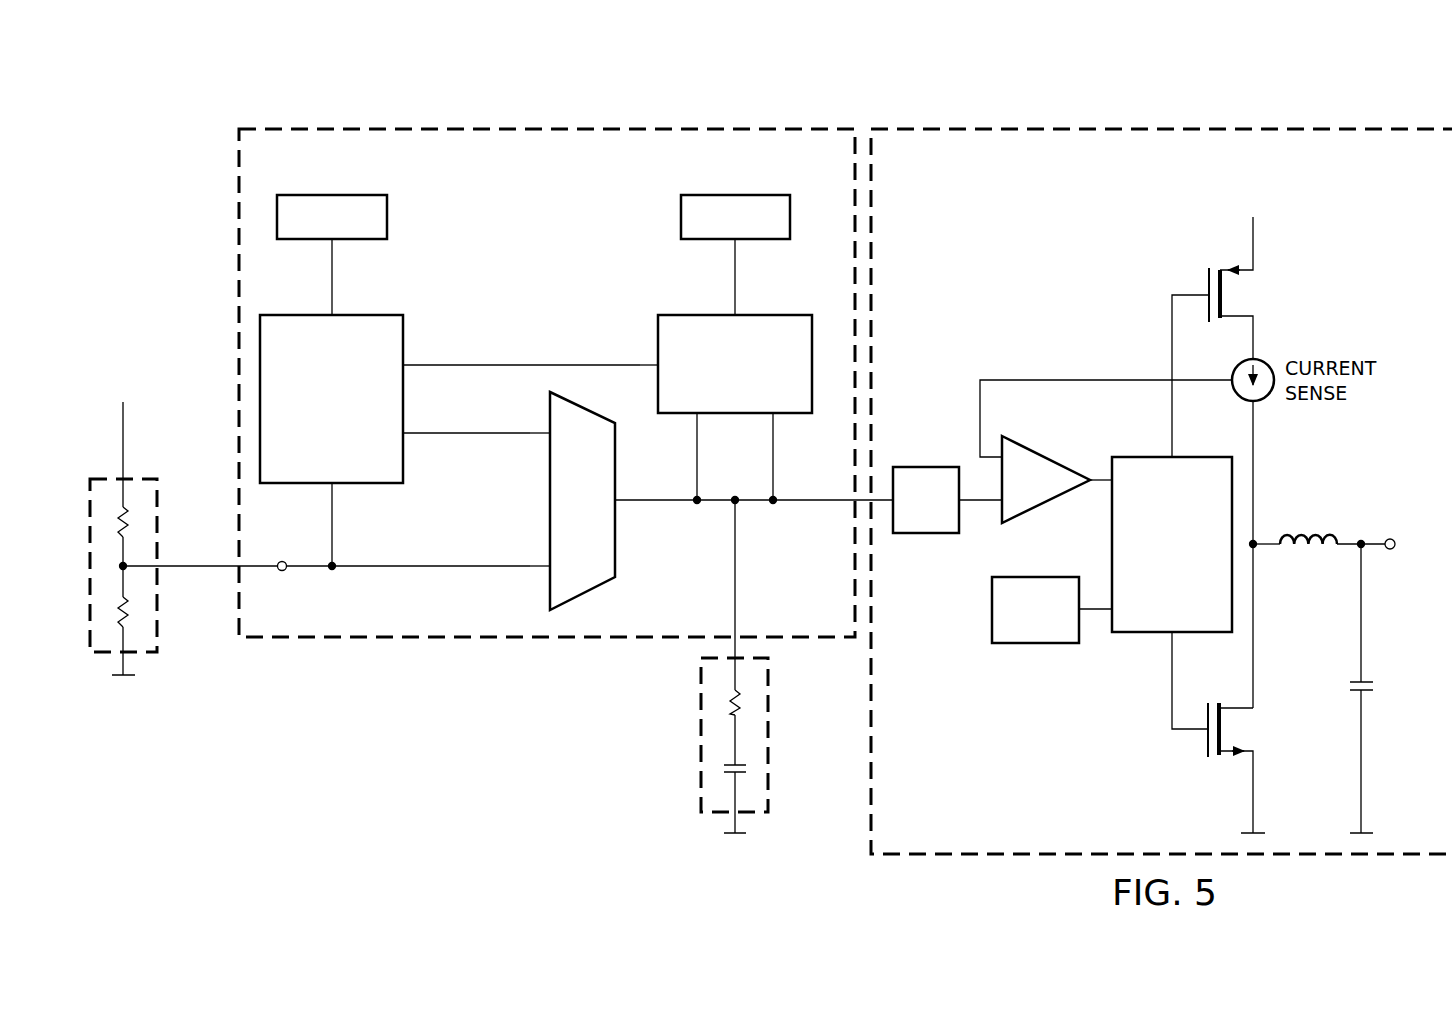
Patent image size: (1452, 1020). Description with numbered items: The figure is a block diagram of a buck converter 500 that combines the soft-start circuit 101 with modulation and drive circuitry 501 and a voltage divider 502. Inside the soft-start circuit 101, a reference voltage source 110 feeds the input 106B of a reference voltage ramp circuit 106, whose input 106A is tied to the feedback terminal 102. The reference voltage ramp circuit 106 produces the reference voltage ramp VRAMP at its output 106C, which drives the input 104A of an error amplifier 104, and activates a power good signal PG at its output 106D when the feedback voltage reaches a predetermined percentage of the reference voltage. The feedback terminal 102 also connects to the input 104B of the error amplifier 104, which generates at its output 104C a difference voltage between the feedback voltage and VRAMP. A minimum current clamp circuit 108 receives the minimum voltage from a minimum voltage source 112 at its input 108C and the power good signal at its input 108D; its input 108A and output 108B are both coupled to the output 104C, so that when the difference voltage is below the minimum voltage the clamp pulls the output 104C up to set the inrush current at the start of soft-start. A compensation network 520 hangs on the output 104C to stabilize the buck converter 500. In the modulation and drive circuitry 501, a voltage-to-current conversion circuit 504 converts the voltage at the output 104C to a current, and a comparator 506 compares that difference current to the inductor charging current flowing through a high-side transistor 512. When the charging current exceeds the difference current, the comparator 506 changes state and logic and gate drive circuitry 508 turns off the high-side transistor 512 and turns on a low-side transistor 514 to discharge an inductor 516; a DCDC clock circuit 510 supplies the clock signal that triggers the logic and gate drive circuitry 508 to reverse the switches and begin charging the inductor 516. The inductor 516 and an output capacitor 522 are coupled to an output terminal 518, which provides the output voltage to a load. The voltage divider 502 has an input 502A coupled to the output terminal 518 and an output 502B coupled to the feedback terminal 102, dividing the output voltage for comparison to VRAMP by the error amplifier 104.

The buck converter 500 is at (197, 73).
The soft-start circuit 101 is at (455, 127).
The modulation and drive circuitry 501 is at (1193, 128).
The reference voltage source 110 is at (323, 194).
The minimum voltage source 112 is at (745, 194).
The reference voltage ramp circuit 106 is at (364, 313).
The input of the reference voltage ramp circuit 106A is at (328, 490).
The input of the reference voltage ramp circuit 106B is at (328, 312).
The output of the reference voltage ramp circuit 106C is at (405, 440).
The output of the reference voltage ramp circuit 106D is at (405, 360).
The minimum current clamp circuit 108 is at (758, 313).
The input of the minimum current clamp circuit 108A is at (693, 420).
The output of the minimum current clamp circuit 108B is at (778, 420).
The input of the minimum current clamp circuit 108C is at (730, 311).
The input of the minimum current clamp circuit 108D is at (655, 359).
The error amplifier 104 is at (603, 517).
The input of the error amplifier 104A is at (545, 440).
The input of the error amplifier 104B is at (545, 572).
The output of the error amplifier 104C is at (618, 504).
The feedback terminal 102 is at (282, 572).
The voltage divider 502 is at (151, 655).
The input of the voltage divider 502A is at (126, 472).
The output of the voltage divider 502B is at (160, 572).
The compensation network 520 is at (700, 748).
The voltage-to-current conversion circuit 504 is at (925, 534).
The comparator 506 is at (1050, 451).
The logic and gate drive circuitry 508 is at (1150, 603).
The DCDC clock circuit 510 is at (1035, 645).
The high-side transistor 512 is at (1203, 282).
The low-side transistor 514 is at (1205, 743).
The inductor 516 is at (1308, 533).
The output terminal 518 is at (1392, 538).
The output capacitor 522 is at (1375, 688).